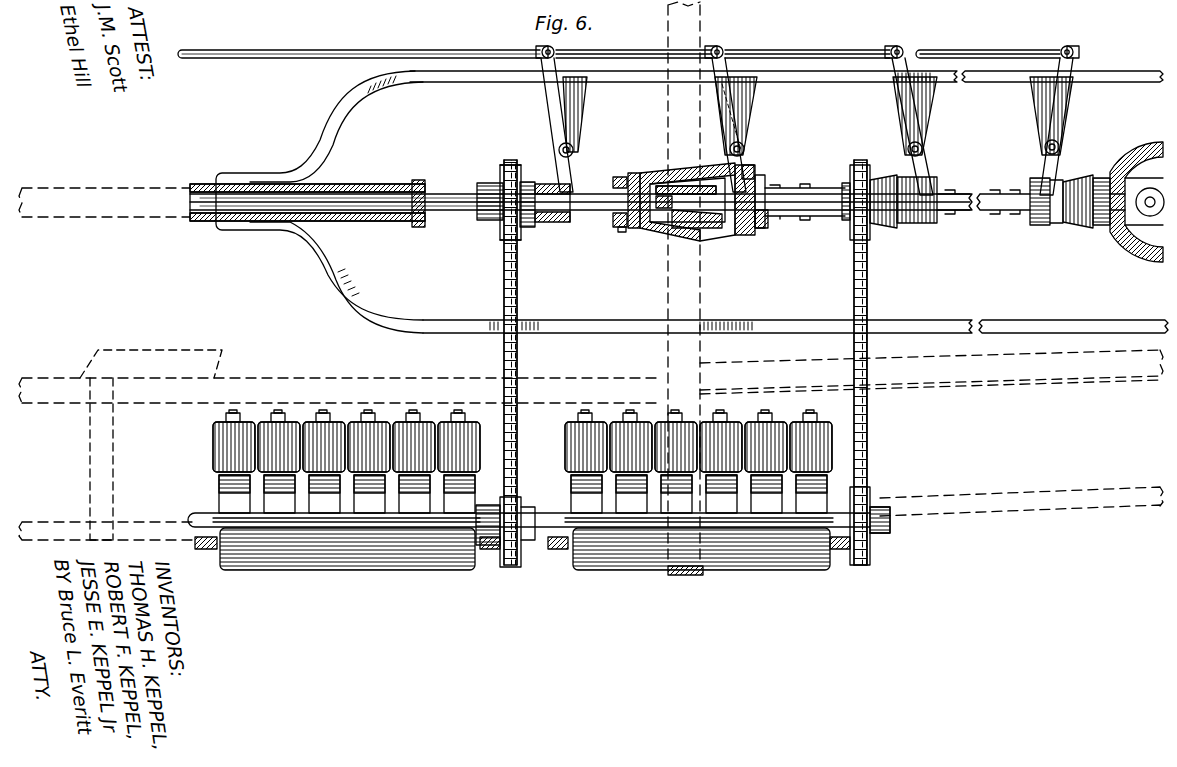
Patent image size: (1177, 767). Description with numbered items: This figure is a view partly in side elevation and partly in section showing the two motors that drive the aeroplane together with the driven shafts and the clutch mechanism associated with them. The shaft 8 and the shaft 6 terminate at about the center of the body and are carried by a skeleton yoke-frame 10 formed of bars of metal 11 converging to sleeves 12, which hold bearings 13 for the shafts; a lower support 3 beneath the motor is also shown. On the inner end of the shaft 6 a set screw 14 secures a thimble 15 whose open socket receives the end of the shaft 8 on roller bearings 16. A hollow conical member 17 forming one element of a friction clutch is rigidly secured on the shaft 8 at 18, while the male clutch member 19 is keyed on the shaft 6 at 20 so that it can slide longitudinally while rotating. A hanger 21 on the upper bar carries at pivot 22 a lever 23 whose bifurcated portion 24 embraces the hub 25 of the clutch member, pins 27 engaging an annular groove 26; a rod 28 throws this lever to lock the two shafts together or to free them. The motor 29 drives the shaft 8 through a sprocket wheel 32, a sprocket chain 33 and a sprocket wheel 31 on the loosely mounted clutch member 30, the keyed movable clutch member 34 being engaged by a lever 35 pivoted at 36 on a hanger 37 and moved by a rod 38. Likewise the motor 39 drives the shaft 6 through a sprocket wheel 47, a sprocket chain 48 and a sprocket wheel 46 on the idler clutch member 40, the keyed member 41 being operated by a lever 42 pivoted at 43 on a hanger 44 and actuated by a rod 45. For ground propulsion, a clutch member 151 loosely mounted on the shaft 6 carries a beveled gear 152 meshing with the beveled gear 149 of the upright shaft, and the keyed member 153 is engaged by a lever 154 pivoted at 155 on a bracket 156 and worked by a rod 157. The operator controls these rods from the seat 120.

The lower shaft base bearing 3 is at (681, 576).
The shaft 6 is at (985, 194).
The shaft 8 is at (447, 194).
The skeleton yoke-frame 10 is at (333, 128).
The bars of metal 11 is at (481, 76).
The sleeves 12 is at (345, 184).
The bearings 13 is at (419, 180).
The set screw 14 is at (710, 170).
The thimble 15 is at (706, 236).
The roller bearings 16 is at (660, 177).
The hollow conical member 17 is at (650, 230).
The securing point of conical member 18 is at (619, 178).
The male clutch member 19 is at (737, 236).
The key 20 is at (776, 196).
The hanger 21 is at (746, 108).
The pivot 22 is at (746, 150).
The lever 23 is at (729, 52).
The bifurcated portion 24 is at (752, 172).
The hub 25 is at (760, 222).
The annular groove 26 is at (760, 232).
The pins 27 is at (775, 198).
The rod 28 is at (620, 45).
The motor 29 is at (342, 422).
The friction clutch member 30 is at (530, 228).
The sprocket wheel 31 is at (512, 168).
The sprocket wheel 32 is at (511, 567).
The sprocket chain 33 is at (518, 292).
The movable clutch member 34 is at (563, 222).
The lever 35 is at (552, 113).
The pivot 36 is at (574, 152).
The hanger 37 is at (584, 122).
The rod 38 is at (405, 45).
The motor 39 is at (736, 422).
The idler clutch member 40 is at (882, 224).
The clutch member 41 is at (928, 224).
The lever 42 is at (925, 163).
The pivot 43 is at (906, 150).
The hanger 44 is at (926, 106).
The rod 45 is at (835, 50).
The sprocket wheel 46 is at (858, 168).
The sprocket wheel 47 is at (861, 566).
The sprocket chain 48 is at (868, 297).
The seat 120 is at (152, 350).
The beveled gear 149 is at (1147, 257).
The friction clutch member 151 is at (1078, 182).
The beveled gear 152 is at (1103, 228).
The clutch member 153 is at (1045, 228).
The lever 154 is at (1076, 112).
The pivot 155 is at (1044, 150).
The bracket 156 is at (1042, 100).
The rod 157 is at (1003, 50).